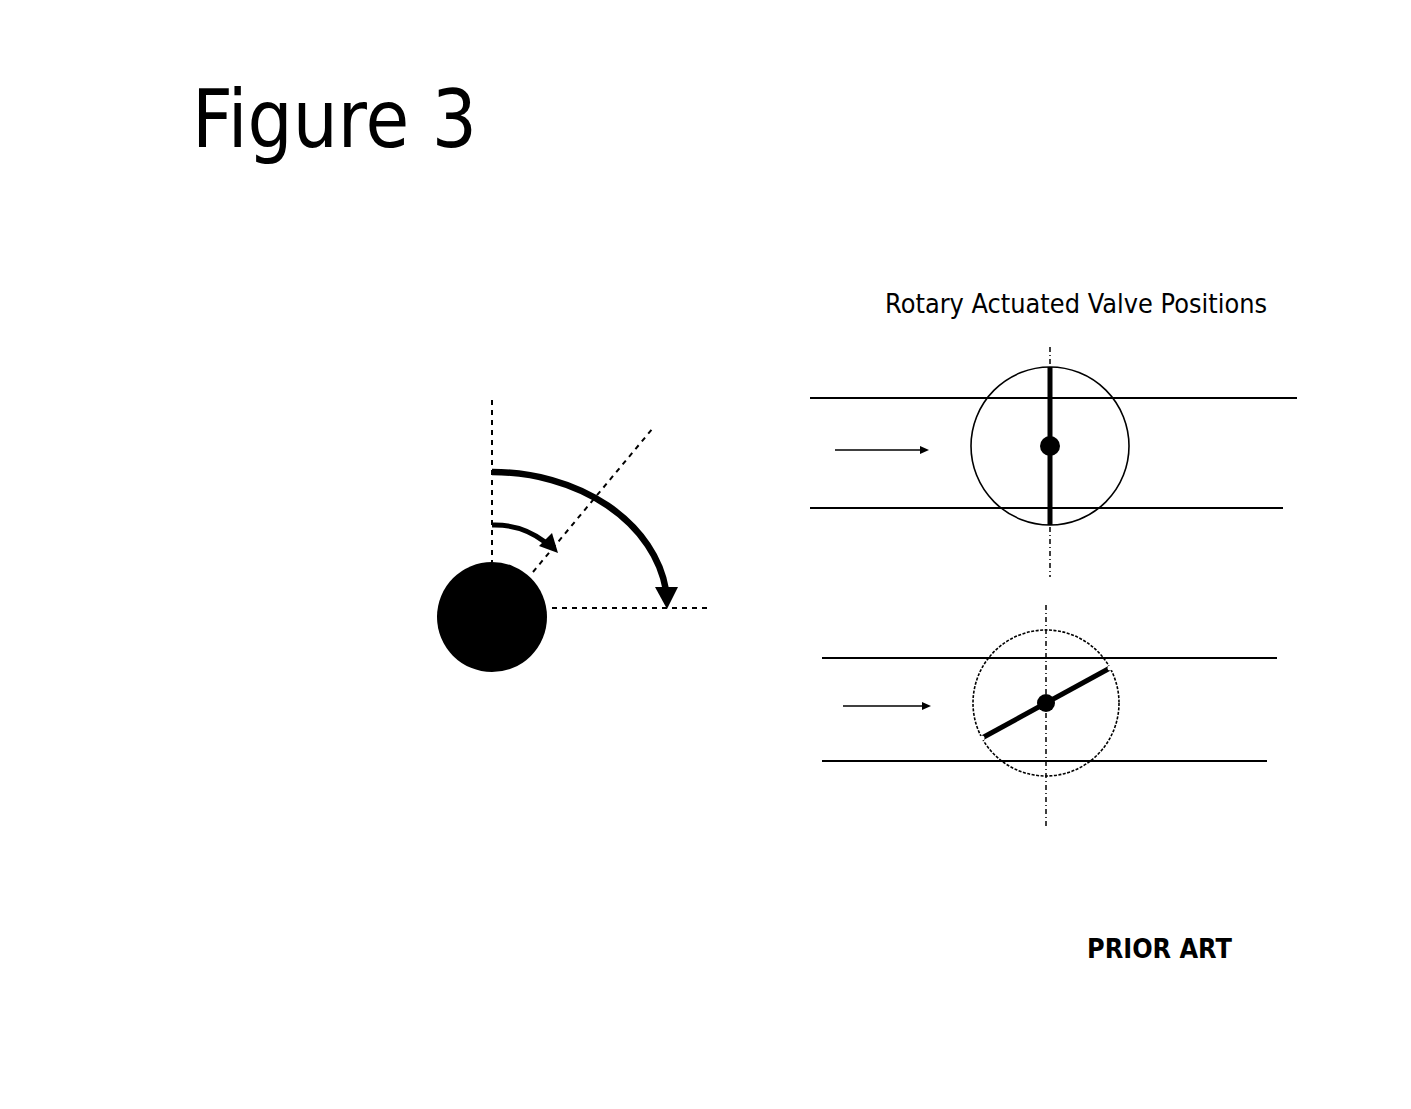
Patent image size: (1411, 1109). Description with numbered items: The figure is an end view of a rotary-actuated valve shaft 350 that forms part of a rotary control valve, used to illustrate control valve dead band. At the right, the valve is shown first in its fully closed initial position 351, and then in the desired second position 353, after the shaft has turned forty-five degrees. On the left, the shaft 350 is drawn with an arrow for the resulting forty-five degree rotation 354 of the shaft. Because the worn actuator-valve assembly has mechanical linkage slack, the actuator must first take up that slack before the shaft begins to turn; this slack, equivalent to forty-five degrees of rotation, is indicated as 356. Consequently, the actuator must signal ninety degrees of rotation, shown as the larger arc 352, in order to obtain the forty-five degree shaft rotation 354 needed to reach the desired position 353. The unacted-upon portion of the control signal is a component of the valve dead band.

The rotary-actuated valve shaft 350 is at (485, 672).
The fully closed position 1 351 is at (1202, 459).
The 90 degree rotation signaled 352 is at (490, 472).
The desired position 2 353 is at (1198, 727).
The 45 degree rotation 354 is at (482, 520).
The 45 degrees of slack 356 is at (590, 445).